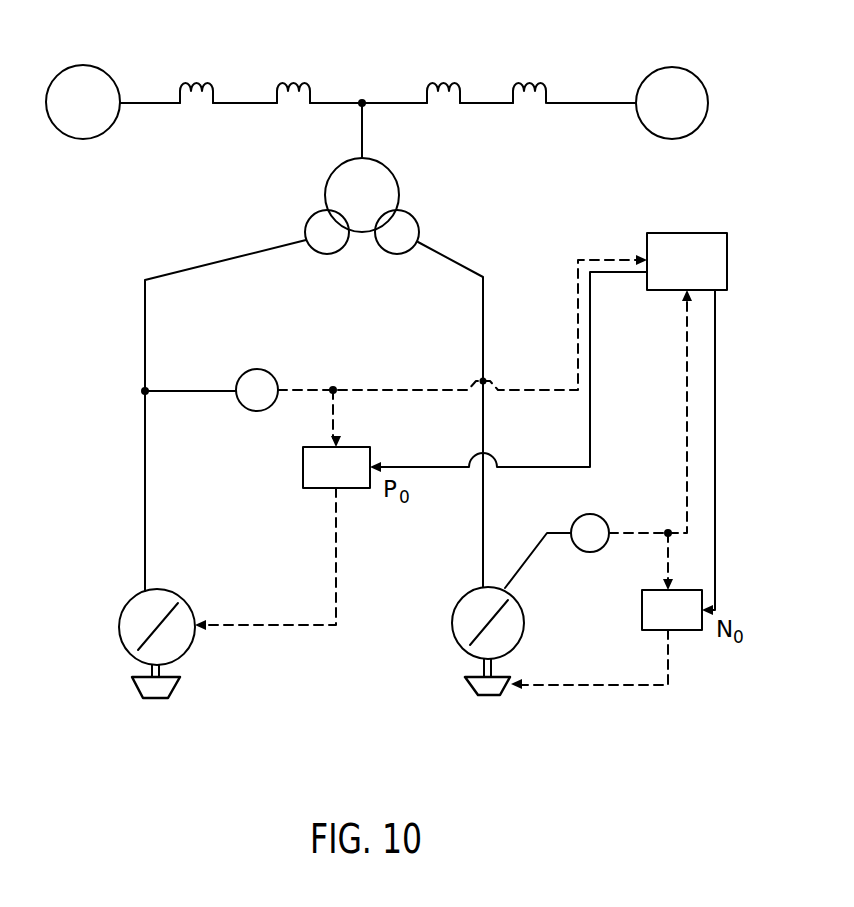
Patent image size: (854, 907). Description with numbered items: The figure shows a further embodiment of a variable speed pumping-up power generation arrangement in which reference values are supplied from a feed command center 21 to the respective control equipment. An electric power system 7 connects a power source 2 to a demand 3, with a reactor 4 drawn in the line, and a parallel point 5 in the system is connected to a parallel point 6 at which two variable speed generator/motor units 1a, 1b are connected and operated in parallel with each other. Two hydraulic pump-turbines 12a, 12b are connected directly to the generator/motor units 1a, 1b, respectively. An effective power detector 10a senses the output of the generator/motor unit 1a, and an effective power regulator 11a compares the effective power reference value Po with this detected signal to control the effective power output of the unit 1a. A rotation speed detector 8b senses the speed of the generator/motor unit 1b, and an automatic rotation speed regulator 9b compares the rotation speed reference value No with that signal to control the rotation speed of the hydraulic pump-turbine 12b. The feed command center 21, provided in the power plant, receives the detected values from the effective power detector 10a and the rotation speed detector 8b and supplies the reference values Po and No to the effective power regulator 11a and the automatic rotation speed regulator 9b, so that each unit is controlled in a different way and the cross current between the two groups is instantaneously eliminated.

The power source 2 is at (109, 75).
The demand 3 is at (699, 77).
The reactor 4 is at (305, 82).
The parallel point 5 is at (366, 100).
The parallel point 6 is at (399, 197).
The electric power system 7 is at (578, 101).
The feed command center 21 is at (727, 236).
The effective power detector 10a is at (272, 377).
The effective power regulator 11a is at (364, 447).
The rotation speed detector 8b is at (604, 520).
The variable speed generator/motor unit 1a is at (184, 600).
The variable speed generator/motor unit 1b is at (518, 600).
The automatic rotation speed regulator 9b is at (682, 631).
The hydraulic pump-turbine 12a is at (134, 682).
The hydraulic pump-turbine 12b is at (478, 683).